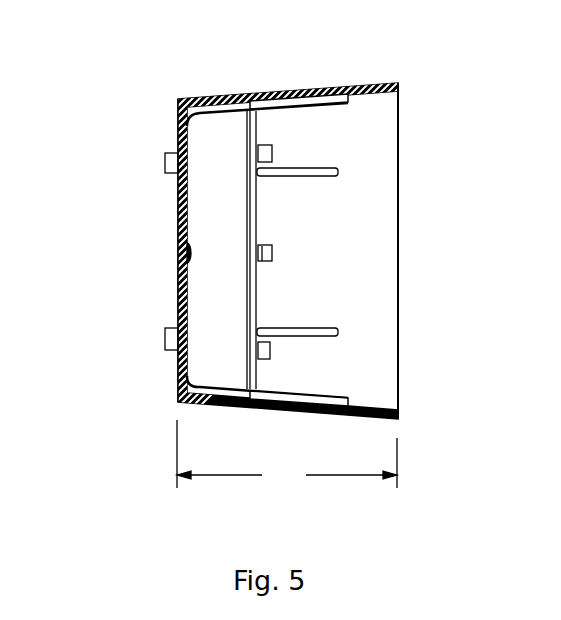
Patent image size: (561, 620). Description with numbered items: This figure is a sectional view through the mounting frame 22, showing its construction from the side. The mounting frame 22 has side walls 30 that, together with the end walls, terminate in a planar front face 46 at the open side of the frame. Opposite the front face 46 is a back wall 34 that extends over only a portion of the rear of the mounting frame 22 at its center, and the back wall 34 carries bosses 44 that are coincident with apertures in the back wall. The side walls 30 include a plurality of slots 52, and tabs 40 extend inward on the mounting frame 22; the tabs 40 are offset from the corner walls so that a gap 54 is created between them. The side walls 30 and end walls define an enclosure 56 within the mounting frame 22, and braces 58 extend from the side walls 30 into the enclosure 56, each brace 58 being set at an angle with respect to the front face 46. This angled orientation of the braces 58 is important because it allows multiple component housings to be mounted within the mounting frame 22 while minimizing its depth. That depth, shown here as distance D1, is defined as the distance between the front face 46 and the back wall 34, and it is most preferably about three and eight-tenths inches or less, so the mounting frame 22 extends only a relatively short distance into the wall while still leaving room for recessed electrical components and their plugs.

The mounting frame 22 is at (148, 74).
The side walls 30 is at (256, 96).
The back wall 34 is at (177, 255).
The tabs 40 is at (274, 253).
The bosses 44 is at (164, 163).
The front face 46 is at (398, 239).
The slots 52 is at (310, 178).
The gap 54 is at (261, 262).
The enclosure 56 is at (373, 260).
The braces 58 is at (313, 104).
The depth D1 is at (287, 454).